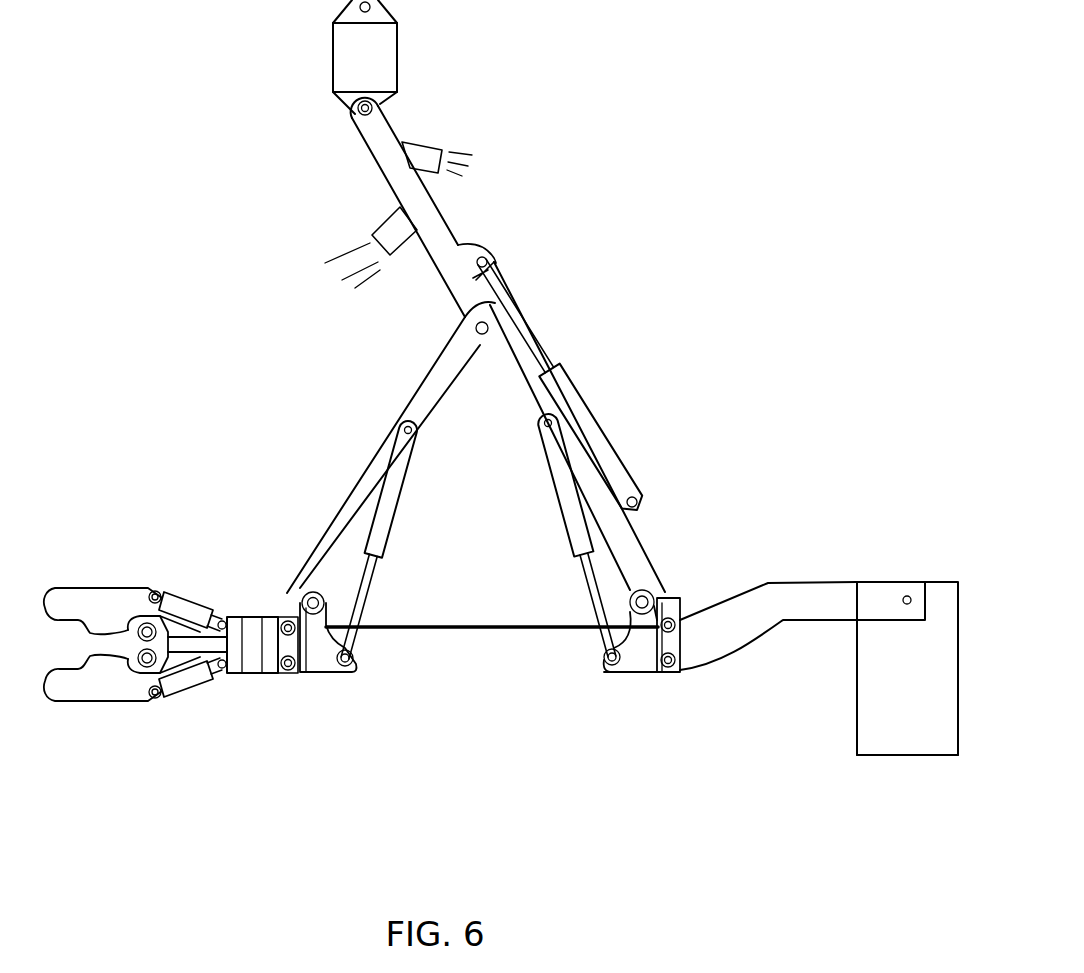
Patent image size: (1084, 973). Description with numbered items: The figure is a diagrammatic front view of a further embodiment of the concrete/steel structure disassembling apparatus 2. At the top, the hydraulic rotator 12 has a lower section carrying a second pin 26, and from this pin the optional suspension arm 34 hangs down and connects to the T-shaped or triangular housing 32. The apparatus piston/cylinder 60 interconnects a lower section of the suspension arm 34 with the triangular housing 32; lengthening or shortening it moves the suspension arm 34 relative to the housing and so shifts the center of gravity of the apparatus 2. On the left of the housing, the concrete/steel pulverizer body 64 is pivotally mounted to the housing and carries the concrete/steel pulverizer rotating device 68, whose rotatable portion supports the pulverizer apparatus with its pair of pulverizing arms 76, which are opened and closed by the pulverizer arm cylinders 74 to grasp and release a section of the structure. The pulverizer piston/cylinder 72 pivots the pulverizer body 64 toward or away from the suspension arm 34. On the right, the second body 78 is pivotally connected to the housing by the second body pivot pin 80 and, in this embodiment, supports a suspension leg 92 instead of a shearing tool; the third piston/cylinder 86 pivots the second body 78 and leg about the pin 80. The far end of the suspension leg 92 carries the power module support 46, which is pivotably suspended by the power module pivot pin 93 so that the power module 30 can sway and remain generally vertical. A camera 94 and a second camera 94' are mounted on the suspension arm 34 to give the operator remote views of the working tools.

The concrete/steel structure disassembling apparatus 2 is at (679, 197).
The hydraulic rotator 12 is at (399, 50).
The second pin 26 is at (352, 113).
The power module 30 is at (893, 696).
The triangular housing 32 is at (428, 378).
The suspension arm 34 is at (432, 200).
The power module support 46 is at (893, 757).
The apparatus piston/cylinder 60 is at (595, 425).
The concrete/steel pulverizer body 64 is at (318, 673).
The concrete/steel pulverizer rotating device 68 is at (258, 673).
The pulverizer piston/cylinder 72 is at (383, 468).
The pulverizer arm cylinders 74 is at (185, 596).
The pulverizing arms 76 is at (103, 597).
The second body 78 is at (630, 675).
The second body pivot pin 80 is at (655, 597).
The third piston/cylinder 86 is at (578, 492).
The suspension leg 92 is at (730, 658).
The power module pivot pin 93 is at (905, 596).
The camera 94 is at (341, 239).
The second camera 94' is at (463, 130).